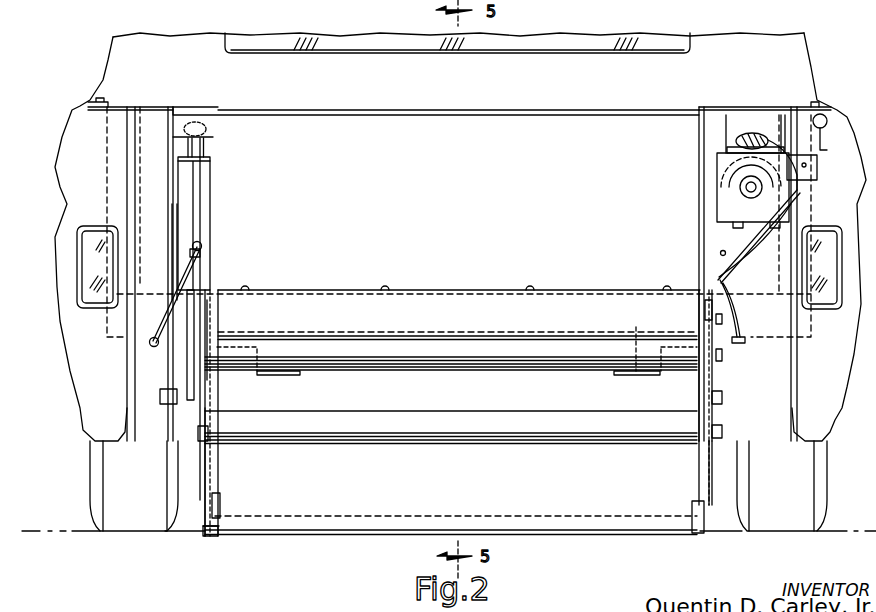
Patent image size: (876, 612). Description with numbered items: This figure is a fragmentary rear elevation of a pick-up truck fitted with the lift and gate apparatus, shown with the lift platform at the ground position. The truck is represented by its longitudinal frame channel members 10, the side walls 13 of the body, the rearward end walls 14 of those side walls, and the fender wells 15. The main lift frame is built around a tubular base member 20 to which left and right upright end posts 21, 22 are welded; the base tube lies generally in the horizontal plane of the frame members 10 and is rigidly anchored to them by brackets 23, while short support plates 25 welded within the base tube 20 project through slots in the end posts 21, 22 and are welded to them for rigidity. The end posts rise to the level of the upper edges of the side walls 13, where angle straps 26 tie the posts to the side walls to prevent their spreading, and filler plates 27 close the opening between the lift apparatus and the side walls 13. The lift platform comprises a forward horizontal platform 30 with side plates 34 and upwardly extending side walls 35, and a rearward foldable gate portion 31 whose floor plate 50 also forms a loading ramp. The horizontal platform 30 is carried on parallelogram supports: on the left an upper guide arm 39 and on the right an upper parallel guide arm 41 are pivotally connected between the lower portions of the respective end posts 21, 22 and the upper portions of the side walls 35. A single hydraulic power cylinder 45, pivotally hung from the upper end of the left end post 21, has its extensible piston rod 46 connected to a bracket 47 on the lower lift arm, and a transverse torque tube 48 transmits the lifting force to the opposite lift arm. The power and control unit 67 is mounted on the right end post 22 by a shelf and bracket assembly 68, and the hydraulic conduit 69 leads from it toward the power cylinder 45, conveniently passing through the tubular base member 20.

The longitudinal frame channel members 10 is at (295, 330).
The side walls 13 is at (62, 137).
The rearward end walls 14 is at (70, 183).
The fender wells 15 is at (227, 238).
The base member 20 is at (400, 351).
The left end post 21 is at (210, 147).
The right end post 22 is at (706, 139).
The brackets 23 is at (263, 372).
The support plates 25 is at (175, 351).
The angle straps 26 is at (133, 107).
The filler plates 27 is at (153, 118).
The horizontal platform 30 is at (205, 495).
The foldable gate portion 31 is at (330, 535).
The side plates 34 is at (222, 508).
The side walls 35 is at (213, 468).
The upper guide arm 39 is at (213, 329).
The upper parallel guide arm 41 is at (702, 327).
The power cylinder 45 is at (198, 178).
The piston rod 46 is at (193, 305).
The bracket 47 is at (198, 418).
The torque tube 48 is at (479, 430).
The floor plate 50 is at (350, 515).
The power and control unit 67 is at (711, 180).
The shelf and bracket assembly 68 is at (739, 244).
The hydraulic conduit 69 is at (741, 322).